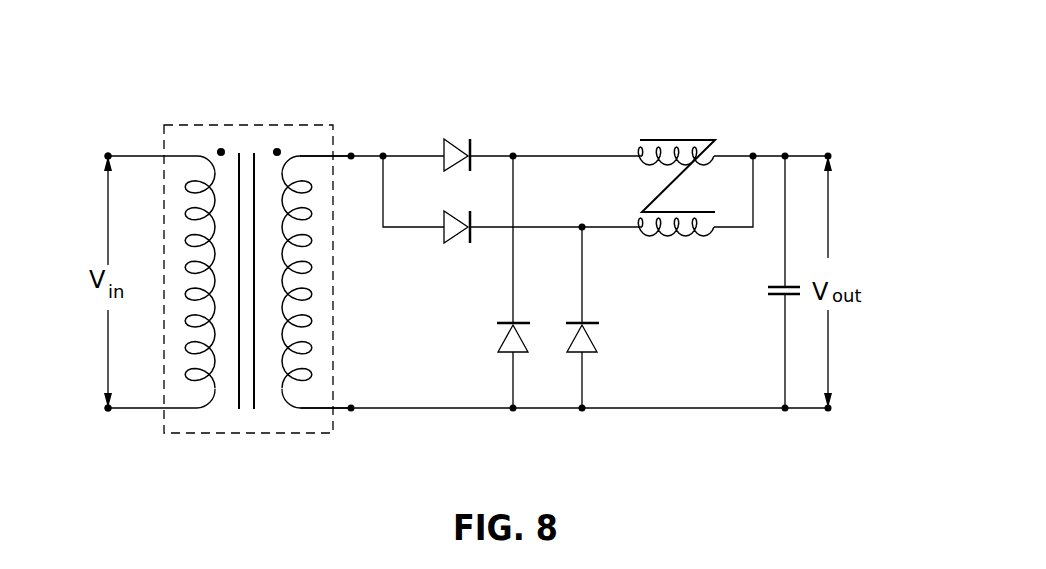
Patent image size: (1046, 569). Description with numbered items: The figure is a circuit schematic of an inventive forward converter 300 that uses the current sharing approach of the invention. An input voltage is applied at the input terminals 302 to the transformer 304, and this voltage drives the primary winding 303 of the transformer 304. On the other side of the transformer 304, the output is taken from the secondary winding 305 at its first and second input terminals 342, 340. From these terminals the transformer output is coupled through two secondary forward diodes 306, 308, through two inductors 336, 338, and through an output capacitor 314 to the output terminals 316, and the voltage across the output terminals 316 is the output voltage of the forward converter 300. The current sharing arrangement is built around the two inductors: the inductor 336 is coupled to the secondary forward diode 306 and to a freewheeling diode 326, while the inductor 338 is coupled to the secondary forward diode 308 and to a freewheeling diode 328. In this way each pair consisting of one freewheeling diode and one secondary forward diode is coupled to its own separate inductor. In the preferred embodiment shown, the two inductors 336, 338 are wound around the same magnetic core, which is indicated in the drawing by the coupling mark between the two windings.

The forward converter 300 is at (604, 80).
The input terminals 302 is at (108, 156).
The primary winding 303 is at (185, 322).
The transformer 304 is at (240, 125).
The secondary winding 305 is at (312, 322).
The secondary forward diode 306 is at (452, 146).
The secondary forward diode 308 is at (442, 236).
The output capacitor 314 is at (776, 298).
The output terminals 316 is at (832, 157).
The freewheeling diode 326 is at (503, 341).
The freewheeling diode 328 is at (596, 344).
The inductor 336 is at (649, 165).
The inductor 338 is at (710, 234).
The second input terminal 340 is at (352, 410).
The first input terminal 342 is at (351, 155).